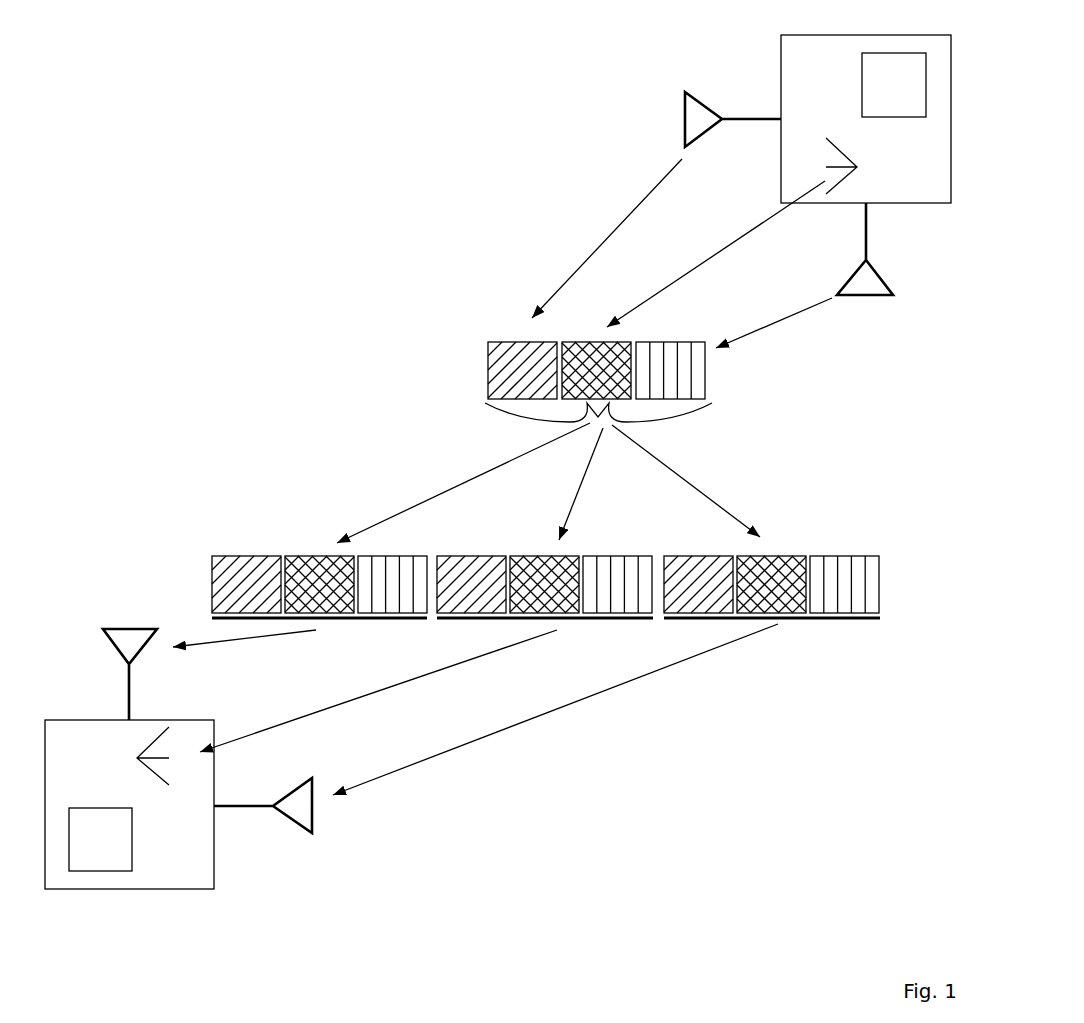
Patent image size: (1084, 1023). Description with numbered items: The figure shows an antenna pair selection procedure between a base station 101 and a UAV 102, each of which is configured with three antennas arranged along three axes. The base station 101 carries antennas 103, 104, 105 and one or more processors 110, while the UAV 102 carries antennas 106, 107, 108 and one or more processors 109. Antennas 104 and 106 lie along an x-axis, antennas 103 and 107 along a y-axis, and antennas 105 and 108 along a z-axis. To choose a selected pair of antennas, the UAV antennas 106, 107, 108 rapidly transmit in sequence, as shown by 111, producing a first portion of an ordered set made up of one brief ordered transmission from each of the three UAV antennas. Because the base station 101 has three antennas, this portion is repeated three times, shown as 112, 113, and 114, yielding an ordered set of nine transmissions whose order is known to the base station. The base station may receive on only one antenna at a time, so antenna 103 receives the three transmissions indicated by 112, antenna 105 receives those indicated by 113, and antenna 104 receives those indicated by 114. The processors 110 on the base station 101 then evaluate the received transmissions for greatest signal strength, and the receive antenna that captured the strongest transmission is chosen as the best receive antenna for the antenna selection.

The base station 101 is at (129, 826).
The UAV 102 is at (866, 139).
The antenna 103 is at (98, 608).
The antenna 104 is at (327, 853).
The antenna 105 is at (140, 758).
The antenna 106 is at (680, 85).
The antenna 107 is at (903, 310).
The antenna 108 is at (859, 166).
The processor 109 is at (894, 85).
The processor 110 is at (100, 839).
The first portion of ordered set of transmissions 111 is at (576, 382).
The first repetition of transmission portion 112 is at (319, 573).
The second repetition of transmission portion 113 is at (545, 573).
The third repetition of transmission portion 114 is at (772, 574).